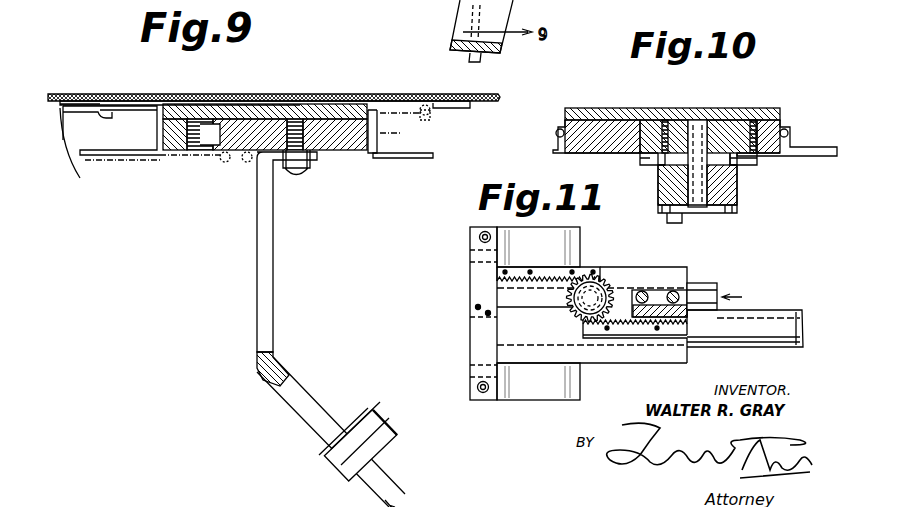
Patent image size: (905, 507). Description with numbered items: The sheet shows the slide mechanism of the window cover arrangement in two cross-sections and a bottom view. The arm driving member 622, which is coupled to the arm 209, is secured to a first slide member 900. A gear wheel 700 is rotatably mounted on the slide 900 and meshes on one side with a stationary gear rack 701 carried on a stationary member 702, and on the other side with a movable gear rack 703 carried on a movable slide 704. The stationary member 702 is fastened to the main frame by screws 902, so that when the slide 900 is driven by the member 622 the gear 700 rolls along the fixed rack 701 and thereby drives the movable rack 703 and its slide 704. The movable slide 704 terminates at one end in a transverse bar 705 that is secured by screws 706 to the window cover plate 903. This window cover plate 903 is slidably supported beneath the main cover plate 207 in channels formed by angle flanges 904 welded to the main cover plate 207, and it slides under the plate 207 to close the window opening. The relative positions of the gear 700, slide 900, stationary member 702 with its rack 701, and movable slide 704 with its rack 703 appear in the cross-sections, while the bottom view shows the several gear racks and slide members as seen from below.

In FIG. 9, the main cover plate 207 is at (122, 96).
In FIG. 9, the arm 209 is at (400, 500).
In FIG. 9, the arm driving member 622 is at (272, 335).
In FIG. 11, the arm driving member 622 is at (662, 297).
In FIG. 10, the gear wheel 700 is at (740, 170).
In FIG. 11, the gear wheel 700 is at (568, 300).
In FIG. 9, the stationary gear rack 701 is at (430, 155).
In FIG. 10, the stationary gear rack 701 is at (760, 160).
In FIG. 11, the stationary gear rack 701 is at (558, 268).
In FIG. 9, the stationary member 702 is at (362, 152).
In FIG. 10, the stationary member 702 is at (753, 120).
In FIG. 11, the stationary member 702 is at (650, 268).
In FIG. 10, the movable gear rack 703 is at (638, 160).
In FIG. 11, the movable gear rack 703 is at (637, 330).
In FIG. 9, the movable slide 704 is at (238, 98).
In FIG. 10, the movable slide 704 is at (663, 120).
In FIG. 11, the movable slide 704 is at (710, 330).
In FIG. 11, the transverse bar 705 is at (492, 318).
In FIG. 11, the screws 706 is at (492, 237).
In FIG. 9, the first slide member 900 is at (310, 172).
In FIG. 10, the first slide member 900 is at (720, 120).
In FIG. 11, the first slide member 900 is at (732, 296).
In FIG. 9, the screws 902 is at (380, 130).
In FIG. 10, the screws 902 is at (787, 130).
In FIG. 9, the window cover plate 903 is at (102, 108).
In FIG. 11, the window cover plate 903 is at (518, 389).
In FIG. 9, the angle flanges 904 is at (470, 123).